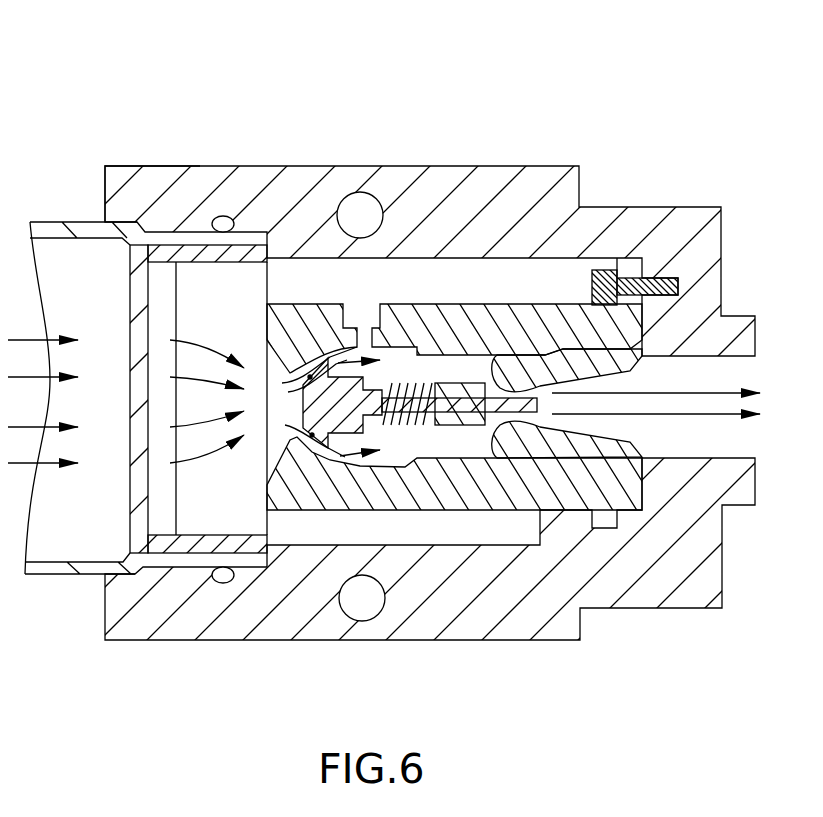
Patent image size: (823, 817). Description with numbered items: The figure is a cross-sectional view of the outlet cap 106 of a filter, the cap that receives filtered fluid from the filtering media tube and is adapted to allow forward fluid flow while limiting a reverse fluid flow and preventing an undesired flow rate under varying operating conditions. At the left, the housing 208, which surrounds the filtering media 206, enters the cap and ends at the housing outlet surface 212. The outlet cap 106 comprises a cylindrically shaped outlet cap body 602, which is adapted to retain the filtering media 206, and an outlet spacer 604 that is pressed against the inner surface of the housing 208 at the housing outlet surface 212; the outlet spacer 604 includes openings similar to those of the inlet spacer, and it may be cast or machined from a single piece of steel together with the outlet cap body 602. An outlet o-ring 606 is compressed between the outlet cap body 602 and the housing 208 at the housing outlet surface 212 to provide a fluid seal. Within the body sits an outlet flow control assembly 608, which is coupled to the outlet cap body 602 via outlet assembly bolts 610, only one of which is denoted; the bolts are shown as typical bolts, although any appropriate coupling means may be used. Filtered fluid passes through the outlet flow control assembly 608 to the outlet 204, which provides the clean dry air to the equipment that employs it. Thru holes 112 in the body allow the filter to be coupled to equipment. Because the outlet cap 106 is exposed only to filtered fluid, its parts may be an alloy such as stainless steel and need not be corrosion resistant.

The outlet cap 106 is at (652, 110).
The thru holes 112 is at (373, 196).
The outlet 204 is at (770, 458).
The filtering media 206 is at (58, 543).
The housing 208 is at (72, 220).
The housing outlet surface 212 is at (146, 174).
The outlet cap body 602 is at (677, 583).
The outlet spacer 604 is at (212, 520).
The outlet o-ring 606 is at (223, 216).
The outlet flow control assembly 608 is at (474, 550).
The outlet assembly bolts 610 is at (662, 283).